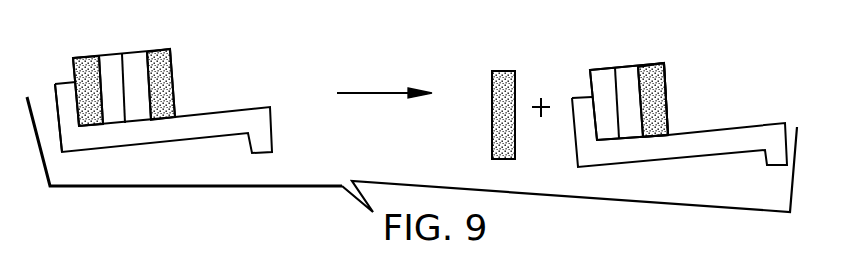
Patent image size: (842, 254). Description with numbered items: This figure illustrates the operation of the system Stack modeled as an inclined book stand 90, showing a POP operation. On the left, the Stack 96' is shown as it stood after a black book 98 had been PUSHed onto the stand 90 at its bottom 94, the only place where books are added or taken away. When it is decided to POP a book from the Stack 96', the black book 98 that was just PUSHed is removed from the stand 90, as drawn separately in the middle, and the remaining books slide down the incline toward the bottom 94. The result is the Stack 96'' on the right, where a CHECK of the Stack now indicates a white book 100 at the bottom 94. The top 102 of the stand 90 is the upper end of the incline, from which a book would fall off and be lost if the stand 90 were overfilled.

The inclined book stand 90 is at (143, 137).
The bottom of the stand 94 is at (58, 118).
The Stack 96' is at (160, 87).
The Stack 96'' is at (667, 94).
The black book 98 is at (83, 57).
The white book 100 is at (598, 68).
The top of the stand 102 is at (785, 122).